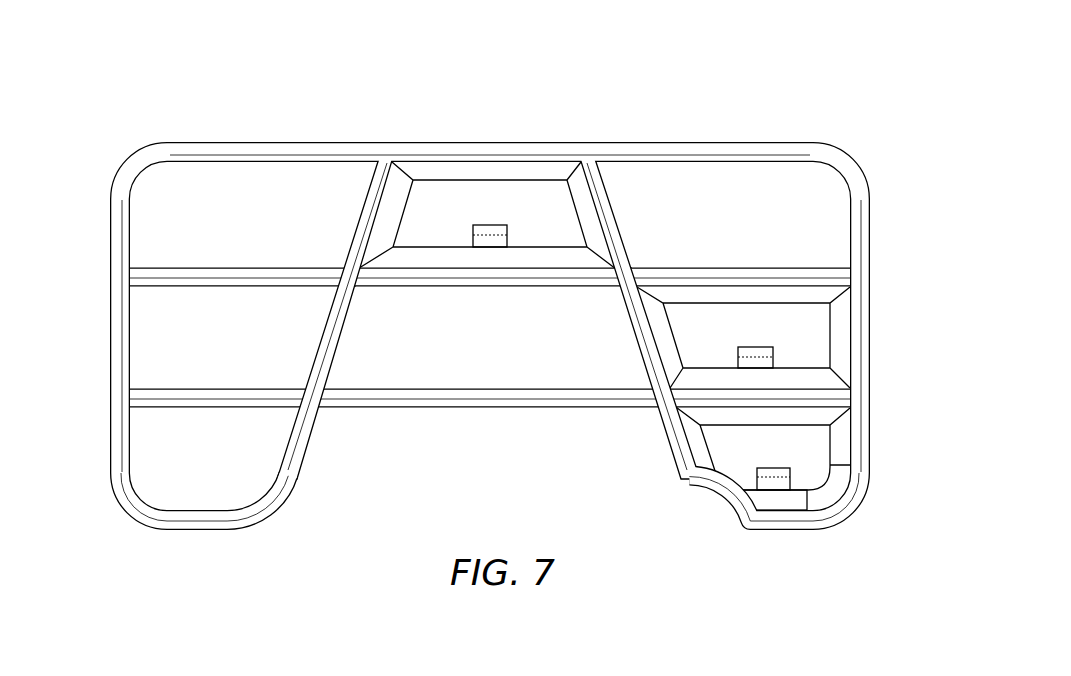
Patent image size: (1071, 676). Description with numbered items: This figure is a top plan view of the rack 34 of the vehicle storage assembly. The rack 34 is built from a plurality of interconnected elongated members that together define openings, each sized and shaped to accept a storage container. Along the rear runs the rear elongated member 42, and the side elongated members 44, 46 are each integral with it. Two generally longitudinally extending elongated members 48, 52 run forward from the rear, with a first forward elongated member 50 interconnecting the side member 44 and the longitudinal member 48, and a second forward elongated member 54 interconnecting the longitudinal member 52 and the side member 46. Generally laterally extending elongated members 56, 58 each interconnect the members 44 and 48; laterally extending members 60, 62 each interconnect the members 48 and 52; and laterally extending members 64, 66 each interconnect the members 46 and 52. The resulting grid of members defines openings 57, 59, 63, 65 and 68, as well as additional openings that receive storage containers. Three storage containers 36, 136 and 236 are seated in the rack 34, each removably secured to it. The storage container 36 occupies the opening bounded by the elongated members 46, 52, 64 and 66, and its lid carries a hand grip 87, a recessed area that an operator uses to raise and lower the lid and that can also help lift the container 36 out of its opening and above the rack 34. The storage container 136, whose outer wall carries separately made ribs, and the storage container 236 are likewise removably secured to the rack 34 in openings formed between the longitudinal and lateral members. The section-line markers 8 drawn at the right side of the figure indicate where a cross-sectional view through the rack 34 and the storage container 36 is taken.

The rack 34 is at (490, 301).
The rear elongated member 42 is at (325, 142).
The side elongated member 44 is at (110, 330).
The side elongated member 46 is at (870, 328).
The generally longitudinally extending elongated member 48 is at (339, 337).
The storage container 36 is at (637, 338).
The first forward elongated member 50 is at (215, 533).
The generally longitudinally extending elongated member 52 is at (666, 432).
The second forward elongated member 54 is at (750, 533).
The generally laterally extending elongated member 56 is at (283, 267).
The opening 57 is at (181, 180).
The generally laterally extending elongated member 58 is at (180, 389).
The opening 59 is at (230, 308).
The generally laterally extending elongated member 60 is at (533, 288).
The generally laterally extending elongated member 62 is at (398, 409).
The opening 63 is at (478, 367).
The generally laterally extending elongated member 64 is at (680, 266).
The opening 65 is at (722, 180).
The generally laterally extending elongated member 66 is at (838, 382).
The opening 68 is at (180, 492).
The hand grip 87 is at (745, 348).
The storage container 136 is at (485, 150).
The storage container 236 is at (679, 473).
The section line 8- 8 is at (847, 230).